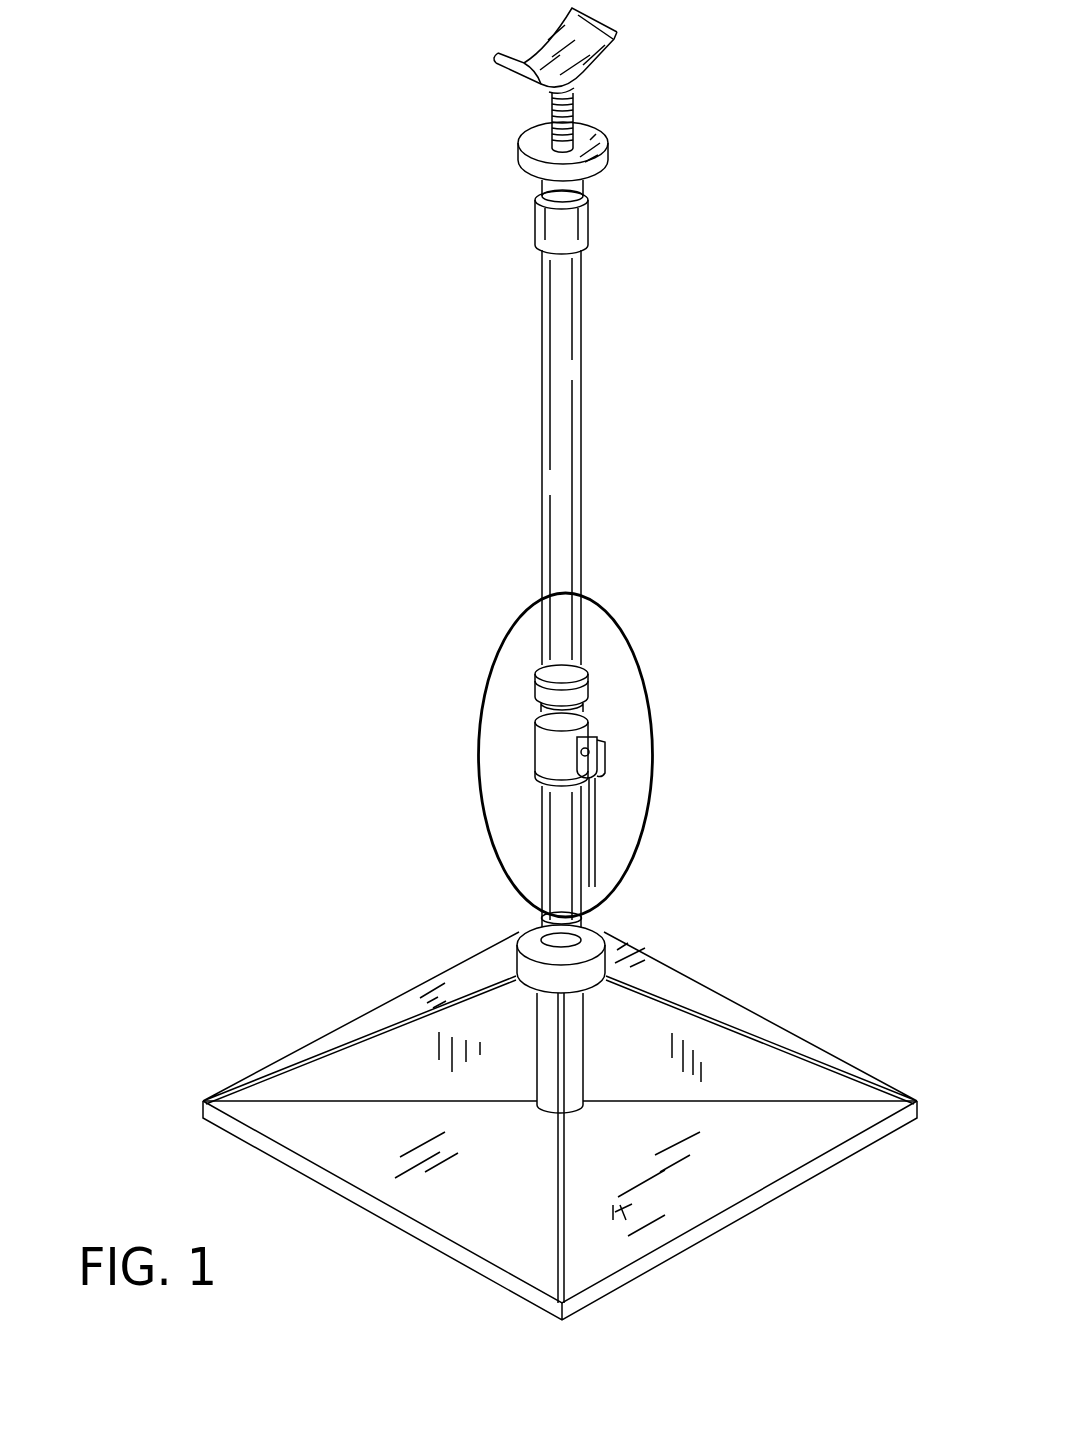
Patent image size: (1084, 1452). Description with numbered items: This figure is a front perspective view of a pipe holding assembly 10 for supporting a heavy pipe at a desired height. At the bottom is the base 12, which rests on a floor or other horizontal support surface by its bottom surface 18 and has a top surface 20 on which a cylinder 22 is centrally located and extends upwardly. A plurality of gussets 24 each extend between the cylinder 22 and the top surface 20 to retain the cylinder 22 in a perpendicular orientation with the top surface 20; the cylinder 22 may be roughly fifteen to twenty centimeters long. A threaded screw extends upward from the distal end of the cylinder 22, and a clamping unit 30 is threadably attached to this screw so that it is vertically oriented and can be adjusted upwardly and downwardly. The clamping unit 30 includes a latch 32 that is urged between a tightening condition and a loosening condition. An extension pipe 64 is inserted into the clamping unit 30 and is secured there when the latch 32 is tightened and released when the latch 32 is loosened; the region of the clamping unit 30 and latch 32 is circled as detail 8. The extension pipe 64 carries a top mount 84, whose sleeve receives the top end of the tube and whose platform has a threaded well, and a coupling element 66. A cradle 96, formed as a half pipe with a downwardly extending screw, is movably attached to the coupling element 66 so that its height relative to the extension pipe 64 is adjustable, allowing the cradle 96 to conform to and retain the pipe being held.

The pipe holding assembly 10 is at (440, 369).
The cradle 96 is at (490, 36).
The coupling element 66 is at (560, 148).
The top mount 84 is at (606, 211).
The extension pipe 64 is at (525, 533).
The detail region 8 is at (645, 690).
The clamping unit 30 is at (520, 748).
The latch 32 is at (621, 751).
The cylinder 22 is at (543, 1063).
The base 12 is at (387, 968).
The top surface 20 is at (758, 1135).
The bottom surface 18 is at (623, 1217).
The gussets 24 is at (317, 1060).